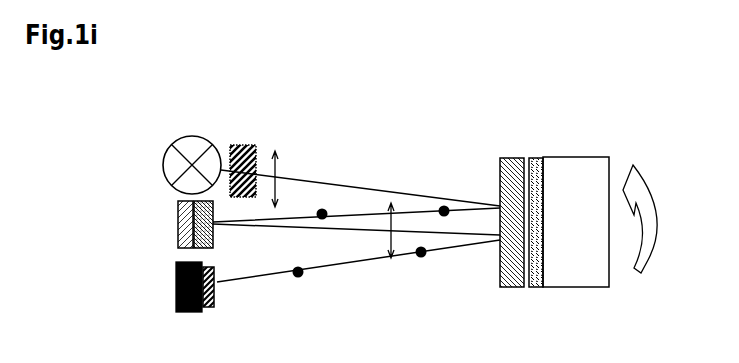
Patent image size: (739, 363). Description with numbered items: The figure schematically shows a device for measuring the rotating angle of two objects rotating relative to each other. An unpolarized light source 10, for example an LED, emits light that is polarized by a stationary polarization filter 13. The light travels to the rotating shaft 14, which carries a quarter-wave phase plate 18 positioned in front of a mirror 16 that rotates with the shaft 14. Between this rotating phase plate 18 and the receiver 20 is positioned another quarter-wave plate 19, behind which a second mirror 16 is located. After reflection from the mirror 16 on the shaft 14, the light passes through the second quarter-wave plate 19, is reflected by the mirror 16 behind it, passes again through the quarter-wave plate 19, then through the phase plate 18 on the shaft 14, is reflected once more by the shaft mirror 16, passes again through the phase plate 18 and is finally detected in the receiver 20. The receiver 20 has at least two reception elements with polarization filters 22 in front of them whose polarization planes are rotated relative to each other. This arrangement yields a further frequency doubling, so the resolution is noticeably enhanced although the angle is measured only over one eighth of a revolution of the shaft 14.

The light source 10 is at (163, 160).
The stationary polarization filter 13 is at (247, 147).
The rotating shaft 14 is at (587, 187).
The mirror 16 is at (178, 220).
The λ/4 plate 18 is at (500, 160).
The second λ/4 plate 19 is at (193, 247).
The receiver 20 is at (182, 312).
The polarization filters 22 is at (207, 307).